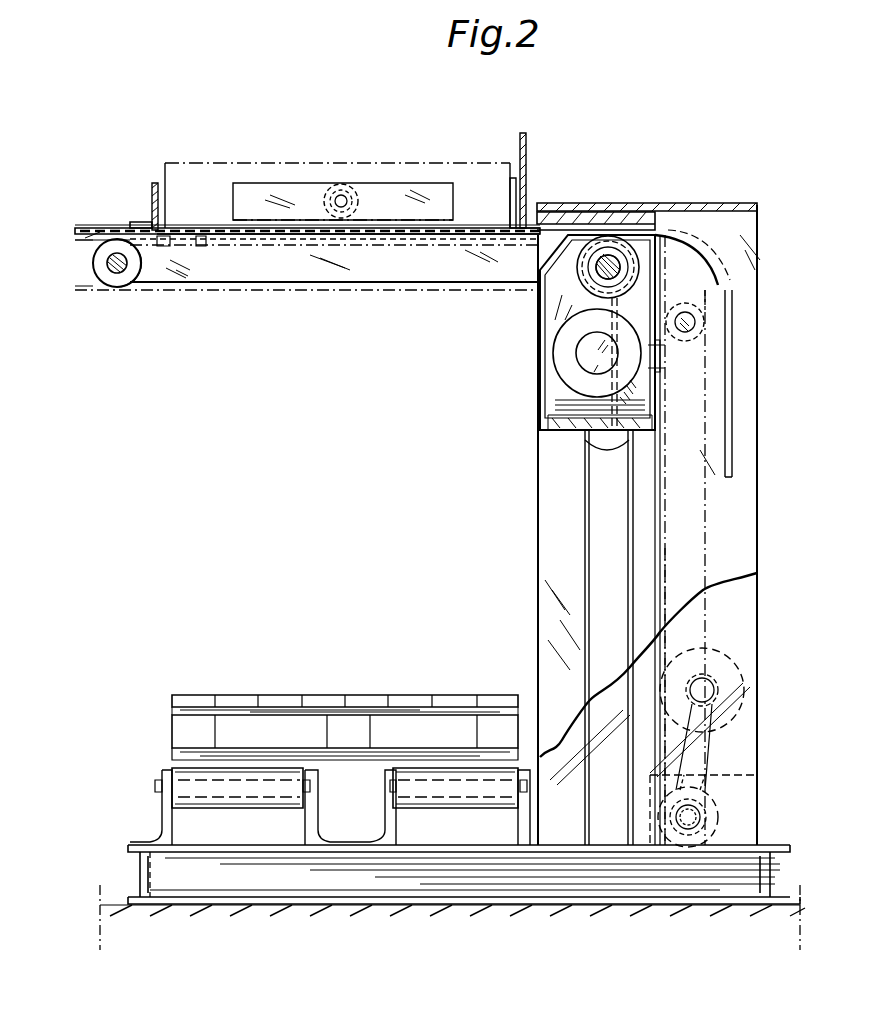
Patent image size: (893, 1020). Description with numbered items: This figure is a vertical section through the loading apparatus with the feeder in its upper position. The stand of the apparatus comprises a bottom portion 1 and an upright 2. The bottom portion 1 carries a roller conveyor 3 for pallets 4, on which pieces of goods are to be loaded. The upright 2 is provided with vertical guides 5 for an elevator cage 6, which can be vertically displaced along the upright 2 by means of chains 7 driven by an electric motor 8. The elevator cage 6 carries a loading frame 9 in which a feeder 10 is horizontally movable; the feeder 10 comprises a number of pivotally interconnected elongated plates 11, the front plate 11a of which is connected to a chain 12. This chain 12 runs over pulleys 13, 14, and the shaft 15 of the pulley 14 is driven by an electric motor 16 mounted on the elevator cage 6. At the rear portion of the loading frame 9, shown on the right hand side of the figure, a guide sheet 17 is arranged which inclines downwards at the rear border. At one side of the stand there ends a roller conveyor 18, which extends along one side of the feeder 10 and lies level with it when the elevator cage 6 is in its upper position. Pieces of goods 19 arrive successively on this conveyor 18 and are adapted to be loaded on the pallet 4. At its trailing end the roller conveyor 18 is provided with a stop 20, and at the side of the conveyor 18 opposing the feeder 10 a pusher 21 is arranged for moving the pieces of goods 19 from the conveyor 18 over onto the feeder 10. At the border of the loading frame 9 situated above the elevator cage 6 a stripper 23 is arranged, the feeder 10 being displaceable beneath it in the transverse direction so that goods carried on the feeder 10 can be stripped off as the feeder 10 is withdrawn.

The bottom portion 1 is at (430, 883).
The upright 2 is at (556, 521).
The roller conveyor 3 is at (163, 748).
The pallet 4 is at (242, 696).
The vertical guides 5 is at (585, 485).
The elevator cage 6 is at (541, 340).
The chains 7 is at (665, 548).
The electric motor 8 is at (697, 690).
The loading frame 9 is at (137, 222).
The feeder 10 is at (215, 208).
The elongated plates 11 is at (302, 226).
The front plate 11a is at (180, 230).
The chain 12 is at (228, 242).
The pulley 13 is at (112, 283).
The pulley 14 is at (608, 215).
The shaft 15 is at (593, 268).
The electric motor 16 is at (568, 372).
The guide sheet 17 is at (700, 243).
The roller conveyor 18 is at (96, 213).
The pieces of goods 19 is at (417, 180).
The stop 20 is at (518, 198).
The pusher 21 is at (330, 186).
The stripper 23 is at (528, 165).